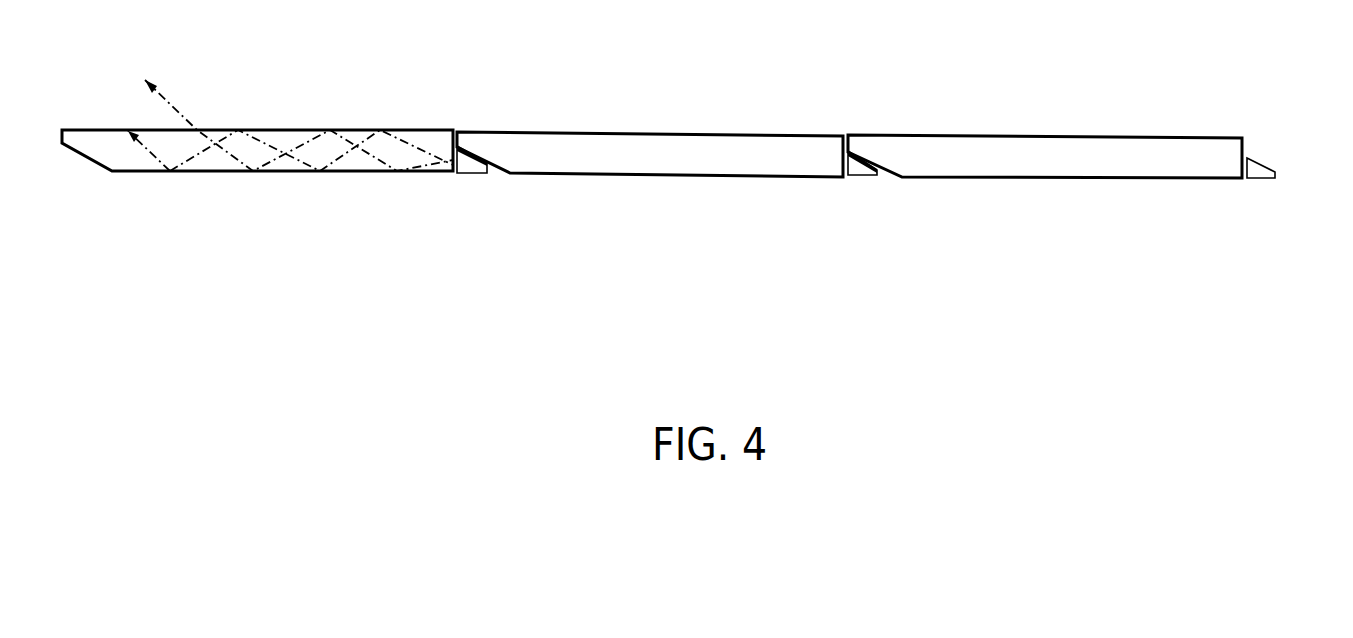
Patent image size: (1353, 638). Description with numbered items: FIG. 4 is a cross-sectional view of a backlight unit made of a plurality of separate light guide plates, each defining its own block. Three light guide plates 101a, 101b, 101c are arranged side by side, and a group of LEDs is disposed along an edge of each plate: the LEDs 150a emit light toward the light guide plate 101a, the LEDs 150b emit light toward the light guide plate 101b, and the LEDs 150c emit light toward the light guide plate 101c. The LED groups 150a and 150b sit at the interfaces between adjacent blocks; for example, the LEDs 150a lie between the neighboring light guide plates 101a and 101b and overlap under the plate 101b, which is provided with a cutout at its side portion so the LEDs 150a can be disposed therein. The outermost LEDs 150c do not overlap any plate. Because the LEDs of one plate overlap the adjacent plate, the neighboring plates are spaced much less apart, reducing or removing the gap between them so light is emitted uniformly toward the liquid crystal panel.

The light guide plate 101a is at (283, 140).
The light guide plate 101b is at (645, 147).
The light guide plate 101c is at (1020, 152).
The group of LEDs 150a is at (470, 168).
The group of LEDs 150b is at (863, 175).
The group of LEDs 150c is at (1260, 172).